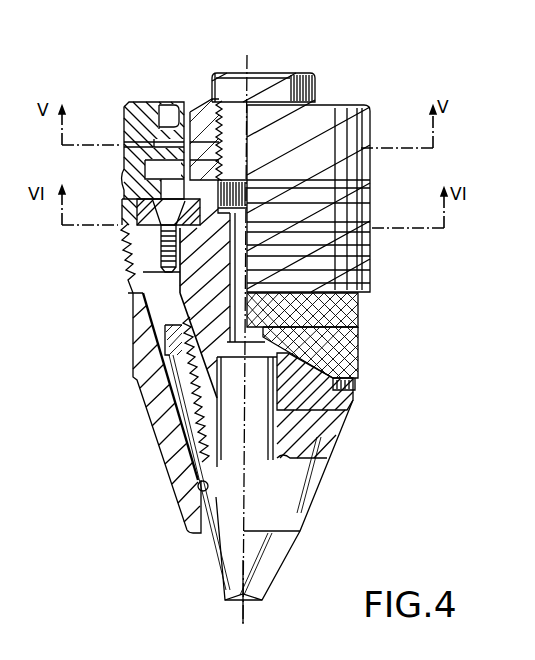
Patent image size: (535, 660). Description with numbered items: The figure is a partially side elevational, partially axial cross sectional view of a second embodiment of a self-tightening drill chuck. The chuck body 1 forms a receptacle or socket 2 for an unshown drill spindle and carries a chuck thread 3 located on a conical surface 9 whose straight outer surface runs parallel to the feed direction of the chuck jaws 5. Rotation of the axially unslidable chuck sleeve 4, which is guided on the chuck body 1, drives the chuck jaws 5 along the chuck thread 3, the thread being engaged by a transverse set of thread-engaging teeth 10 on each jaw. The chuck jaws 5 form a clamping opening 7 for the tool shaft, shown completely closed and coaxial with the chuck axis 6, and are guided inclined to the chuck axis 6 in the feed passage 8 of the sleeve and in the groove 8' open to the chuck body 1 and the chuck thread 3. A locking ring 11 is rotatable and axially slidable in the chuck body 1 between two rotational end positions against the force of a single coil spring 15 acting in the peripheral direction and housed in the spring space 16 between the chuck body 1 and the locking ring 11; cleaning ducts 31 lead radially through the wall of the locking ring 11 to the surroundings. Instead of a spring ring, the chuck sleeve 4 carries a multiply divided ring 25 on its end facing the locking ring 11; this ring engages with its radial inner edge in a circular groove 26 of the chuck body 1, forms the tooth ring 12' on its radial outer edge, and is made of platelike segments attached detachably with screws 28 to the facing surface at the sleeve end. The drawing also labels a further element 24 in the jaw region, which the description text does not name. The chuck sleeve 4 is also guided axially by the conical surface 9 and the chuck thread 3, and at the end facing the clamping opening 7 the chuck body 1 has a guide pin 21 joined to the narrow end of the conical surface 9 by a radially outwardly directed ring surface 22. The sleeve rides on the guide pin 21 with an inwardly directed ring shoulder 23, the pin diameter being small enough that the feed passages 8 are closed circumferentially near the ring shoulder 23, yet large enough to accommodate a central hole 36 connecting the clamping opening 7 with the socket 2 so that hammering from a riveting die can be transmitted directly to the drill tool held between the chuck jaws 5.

The chuck body 1 is at (212, 100).
The receptacle or socket 2 is at (300, 108).
The chuck thread 3 is at (137, 332).
The chuck sleeve 4 is at (148, 360).
The chuck jaws 5 is at (287, 543).
The chuck axis 6 is at (248, 60).
The clamping opening 7 is at (246, 572).
The feed passage 8 is at (146, 313).
The groove 8' is at (170, 472).
The conical surface 9 is at (355, 270).
The thread-engaging teeth 10 is at (355, 383).
The locking ring 11 is at (136, 148).
The tooth ring 12' is at (128, 188).
The coil spring 15 is at (165, 128).
The spring space 16 is at (218, 103).
The guide pin 21 is at (360, 343).
The ring surface 22 is at (360, 312).
The ring shoulder 23 is at (360, 327).
The clamping jaw 24 is at (213, 360).
The multiply divided ring 25 is at (305, 125).
The circular groove 26 is at (355, 106).
The screws 28 is at (133, 253).
The cleaning ducts 31 is at (124, 130).
The central hole 36 is at (365, 196).